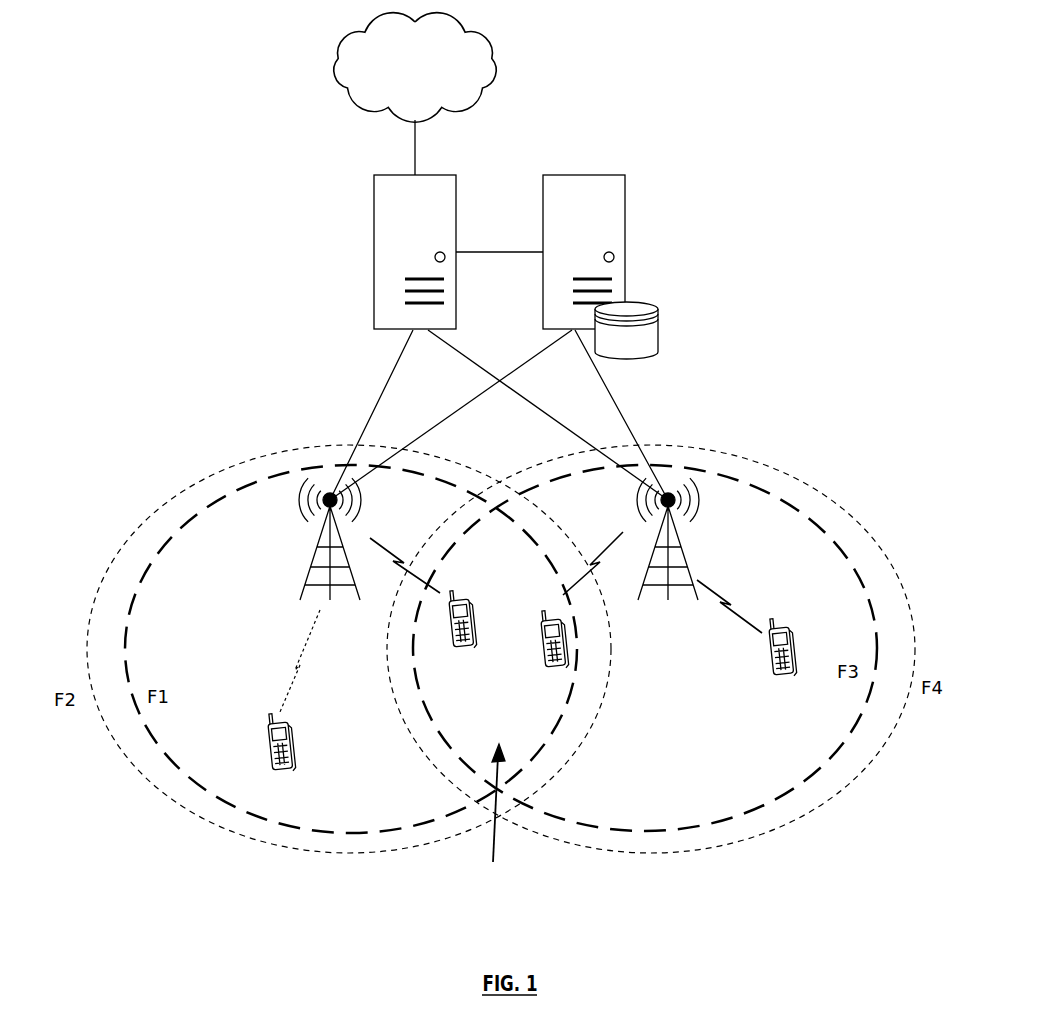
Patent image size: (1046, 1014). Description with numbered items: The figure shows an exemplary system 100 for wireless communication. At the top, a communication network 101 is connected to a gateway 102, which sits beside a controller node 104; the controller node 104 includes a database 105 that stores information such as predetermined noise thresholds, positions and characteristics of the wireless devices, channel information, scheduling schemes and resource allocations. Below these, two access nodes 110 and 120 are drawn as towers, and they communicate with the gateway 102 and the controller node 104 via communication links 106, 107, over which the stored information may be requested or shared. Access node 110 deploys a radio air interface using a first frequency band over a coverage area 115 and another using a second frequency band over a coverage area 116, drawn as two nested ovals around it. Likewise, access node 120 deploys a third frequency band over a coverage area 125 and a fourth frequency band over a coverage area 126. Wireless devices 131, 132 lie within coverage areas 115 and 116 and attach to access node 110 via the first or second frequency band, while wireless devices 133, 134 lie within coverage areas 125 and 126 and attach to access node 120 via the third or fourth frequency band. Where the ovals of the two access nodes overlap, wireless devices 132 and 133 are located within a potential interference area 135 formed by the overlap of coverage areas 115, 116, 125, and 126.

The system 100 is at (596, 81).
The communication network 101 is at (398, 80).
The gateway 102 is at (373, 214).
The controller node 104 is at (626, 233).
The database 105 is at (661, 328).
The communication link 106 is at (477, 367).
The communication link 107 is at (444, 419).
The access node 110 is at (313, 573).
The coverage area 115 is at (352, 834).
The coverage area 116 is at (195, 812).
The access node 120 is at (688, 577).
The coverage area 125 is at (638, 832).
The coverage area 126 is at (768, 846).
The wireless device 131 is at (278, 768).
The wireless device 132 is at (453, 645).
The wireless device 133 is at (556, 668).
The wireless device 134 is at (789, 676).
The potential interference area 135 is at (493, 862).